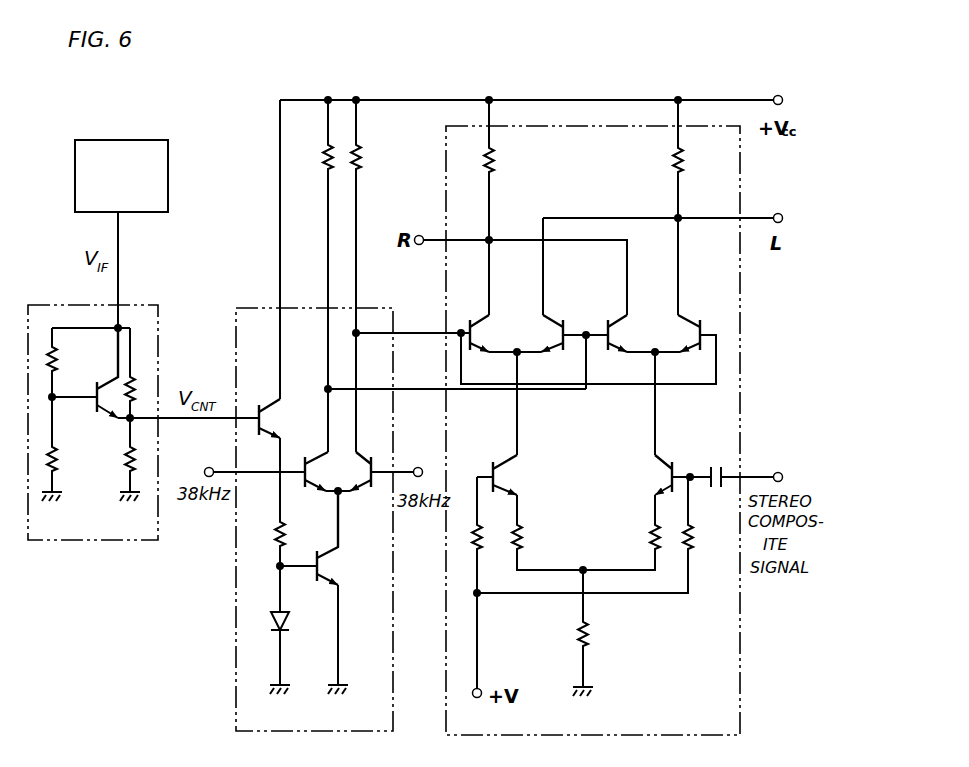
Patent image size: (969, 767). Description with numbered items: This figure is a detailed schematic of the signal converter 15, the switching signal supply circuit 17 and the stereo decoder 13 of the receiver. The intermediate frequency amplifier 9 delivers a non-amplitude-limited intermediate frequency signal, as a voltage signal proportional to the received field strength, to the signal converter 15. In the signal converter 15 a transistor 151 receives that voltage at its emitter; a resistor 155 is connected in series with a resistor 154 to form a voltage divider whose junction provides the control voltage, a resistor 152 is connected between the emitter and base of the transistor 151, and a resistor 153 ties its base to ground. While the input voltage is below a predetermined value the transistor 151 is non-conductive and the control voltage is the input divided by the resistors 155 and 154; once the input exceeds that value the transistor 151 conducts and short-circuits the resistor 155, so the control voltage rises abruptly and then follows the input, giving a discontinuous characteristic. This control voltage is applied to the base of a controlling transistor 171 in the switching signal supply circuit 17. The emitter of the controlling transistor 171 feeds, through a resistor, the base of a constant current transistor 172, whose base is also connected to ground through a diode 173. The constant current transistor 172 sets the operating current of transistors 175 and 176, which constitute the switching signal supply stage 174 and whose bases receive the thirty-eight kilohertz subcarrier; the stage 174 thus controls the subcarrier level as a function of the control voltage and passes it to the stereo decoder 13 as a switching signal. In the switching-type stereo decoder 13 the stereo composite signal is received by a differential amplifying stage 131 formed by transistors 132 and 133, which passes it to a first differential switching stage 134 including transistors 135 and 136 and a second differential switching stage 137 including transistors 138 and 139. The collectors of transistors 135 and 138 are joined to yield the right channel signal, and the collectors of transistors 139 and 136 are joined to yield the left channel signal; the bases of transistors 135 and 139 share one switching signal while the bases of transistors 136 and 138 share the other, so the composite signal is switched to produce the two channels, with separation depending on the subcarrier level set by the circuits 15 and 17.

The intermediate frequency amplifier 9 is at (164, 142).
The stereo decoder 13 is at (447, 138).
The signal converter 15 is at (148, 303).
The switching signal supply circuit 17 is at (247, 343).
The differential amplifying stage 131 is at (589, 558).
The transistor 132 is at (492, 459).
The transistor 133 is at (673, 460).
The first differential switching stage 134 is at (516, 356).
The transistor 135 is at (469, 316).
The transistor 136 is at (563, 317).
The second differential switching stage 137 is at (654, 367).
The transistor 138 is at (607, 318).
The transistor 139 is at (701, 317).
The transistor 151 is at (96, 411).
The resistor 152 is at (56, 372).
The resistor 153 is at (58, 463).
The resistor 154 is at (123, 453).
The resistor 155 is at (134, 379).
The controlling transistor 171 is at (258, 431).
The constant current transistor 172 is at (316, 580).
The diode 173 is at (286, 638).
The switching signal supply stage 174 is at (355, 475).
The transistor 175 is at (304, 458).
The transistor 176 is at (373, 490).